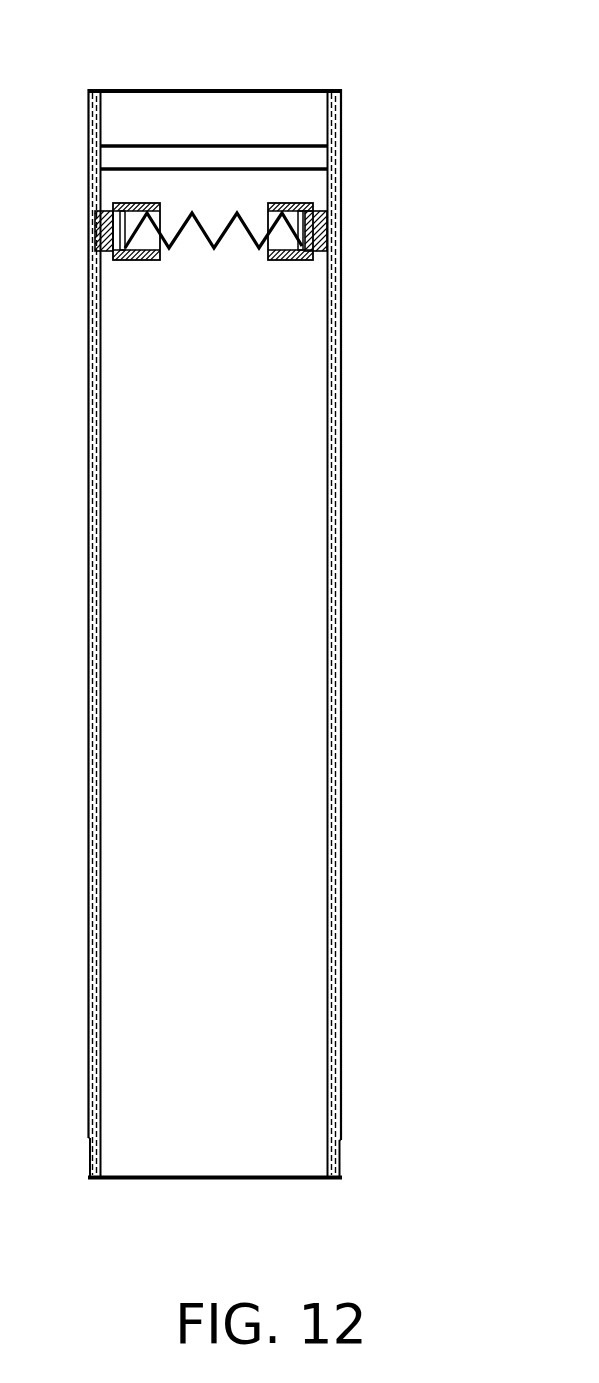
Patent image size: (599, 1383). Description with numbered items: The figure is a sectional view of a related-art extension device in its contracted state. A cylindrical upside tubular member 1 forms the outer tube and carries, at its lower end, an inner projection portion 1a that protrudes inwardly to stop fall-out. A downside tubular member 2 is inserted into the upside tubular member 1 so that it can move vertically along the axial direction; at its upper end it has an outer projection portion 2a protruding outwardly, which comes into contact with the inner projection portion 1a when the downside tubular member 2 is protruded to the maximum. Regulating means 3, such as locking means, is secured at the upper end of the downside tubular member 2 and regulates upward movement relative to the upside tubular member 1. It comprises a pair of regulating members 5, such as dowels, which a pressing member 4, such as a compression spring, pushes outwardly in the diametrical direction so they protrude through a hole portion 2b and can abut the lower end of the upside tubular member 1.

The upside tubular member 1 is at (350, 950).
The inner projection portion 1a is at (341, 1158).
The downside tubular member 2 is at (303, 82).
The outer projection portion 2a is at (336, 131).
The hole portion 2b is at (338, 236).
The regulating means 3 is at (300, 268).
The pressing member 4 is at (222, 246).
The regulating members 5 is at (133, 205).